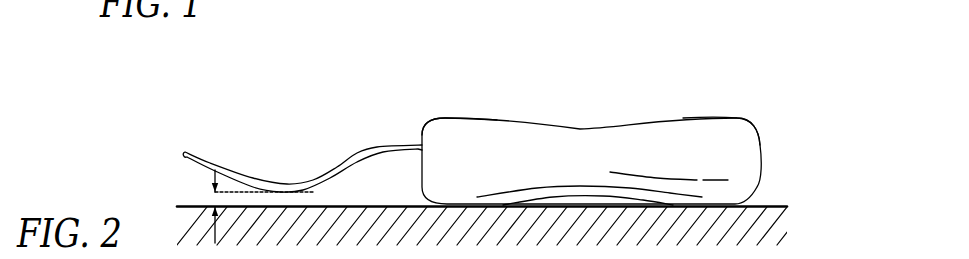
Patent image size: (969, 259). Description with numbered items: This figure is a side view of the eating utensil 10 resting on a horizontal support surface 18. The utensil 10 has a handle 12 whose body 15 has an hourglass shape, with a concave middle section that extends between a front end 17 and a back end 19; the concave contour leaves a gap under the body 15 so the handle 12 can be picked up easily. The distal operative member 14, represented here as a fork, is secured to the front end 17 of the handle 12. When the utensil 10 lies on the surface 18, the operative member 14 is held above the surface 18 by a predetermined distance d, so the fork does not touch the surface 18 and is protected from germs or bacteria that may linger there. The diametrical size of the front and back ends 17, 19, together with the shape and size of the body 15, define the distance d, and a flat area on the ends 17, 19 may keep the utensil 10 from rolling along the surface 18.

The eating utensil 10 is at (522, 102).
The handle 12 is at (581, 124).
The distal operative member 14 is at (254, 160).
The body 15 is at (743, 160).
The front end 17 is at (440, 117).
The support surface 18 is at (772, 202).
The back end 19 is at (740, 118).
The predetermined distance d is at (212, 199).